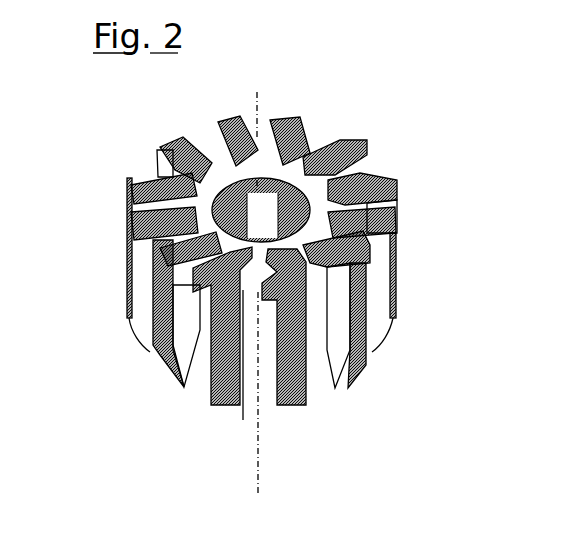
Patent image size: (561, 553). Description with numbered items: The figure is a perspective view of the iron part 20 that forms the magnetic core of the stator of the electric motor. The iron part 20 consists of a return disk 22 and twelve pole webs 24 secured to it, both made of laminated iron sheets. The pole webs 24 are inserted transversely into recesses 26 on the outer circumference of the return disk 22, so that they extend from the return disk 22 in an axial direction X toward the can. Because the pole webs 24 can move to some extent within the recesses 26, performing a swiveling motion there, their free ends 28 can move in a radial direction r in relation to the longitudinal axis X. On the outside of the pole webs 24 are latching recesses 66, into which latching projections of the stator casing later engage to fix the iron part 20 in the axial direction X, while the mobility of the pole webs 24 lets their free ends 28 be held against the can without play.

The iron part 20 is at (333, 115).
The return disk 22 is at (315, 212).
The pole webs 24 is at (127, 198).
The recesses 26 is at (312, 145).
The free ends 28 is at (380, 351).
The latching recesses 66 is at (213, 403).
The axial direction X is at (261, 455).
The radial direction r is at (137, 376).